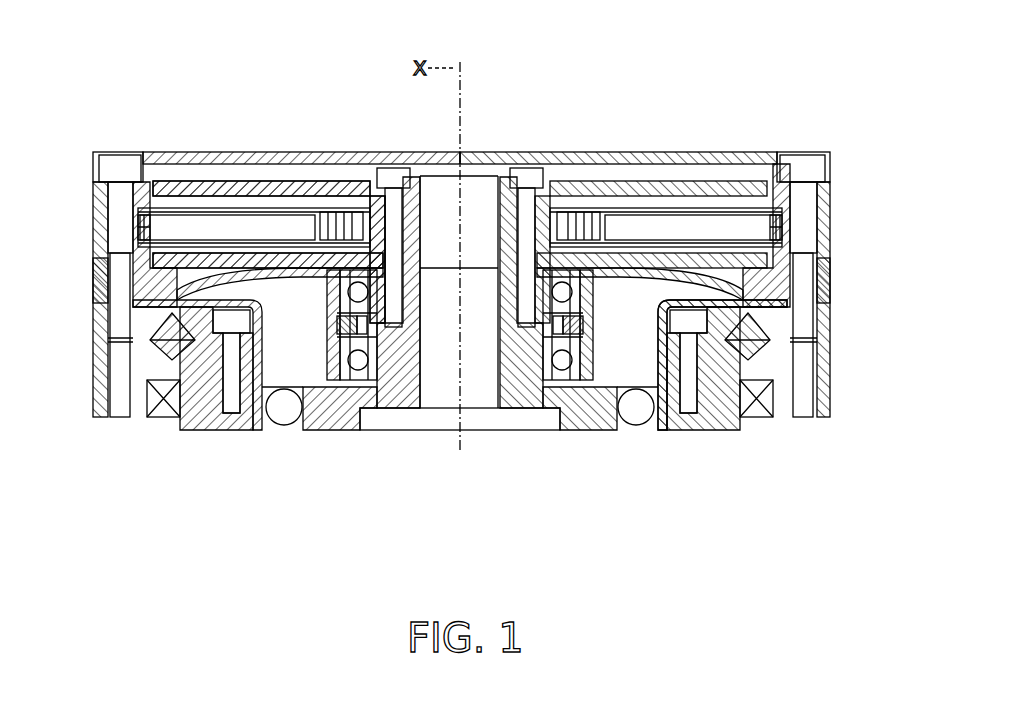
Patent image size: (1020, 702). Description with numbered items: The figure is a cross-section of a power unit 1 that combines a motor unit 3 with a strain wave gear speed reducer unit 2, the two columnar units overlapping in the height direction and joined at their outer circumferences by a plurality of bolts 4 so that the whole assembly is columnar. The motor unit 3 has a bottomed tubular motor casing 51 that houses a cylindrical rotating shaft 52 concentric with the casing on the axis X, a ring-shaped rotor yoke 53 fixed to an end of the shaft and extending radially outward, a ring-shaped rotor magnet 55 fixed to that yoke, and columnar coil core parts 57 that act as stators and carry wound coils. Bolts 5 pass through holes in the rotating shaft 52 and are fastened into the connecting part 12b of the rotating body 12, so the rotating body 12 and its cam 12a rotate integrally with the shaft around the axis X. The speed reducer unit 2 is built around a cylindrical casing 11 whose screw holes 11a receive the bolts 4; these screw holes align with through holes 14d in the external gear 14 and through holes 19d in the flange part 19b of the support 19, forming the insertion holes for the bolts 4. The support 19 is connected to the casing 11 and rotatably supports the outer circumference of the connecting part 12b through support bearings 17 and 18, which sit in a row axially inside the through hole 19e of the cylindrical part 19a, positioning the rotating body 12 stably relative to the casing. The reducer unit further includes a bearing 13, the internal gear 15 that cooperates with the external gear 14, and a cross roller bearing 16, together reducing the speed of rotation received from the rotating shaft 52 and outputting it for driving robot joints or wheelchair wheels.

The power unit 1 is at (822, 88).
The strain wave gear speed reducer unit 2 is at (797, 443).
The motor unit 3 is at (118, 126).
The bolts 4 is at (808, 222).
The bolts 5 is at (393, 168).
The casing 11 is at (830, 340).
The screw holes 11a is at (128, 365).
The rotating body 12 is at (349, 433).
The cam 12a is at (590, 430).
The connecting part 12b is at (437, 390).
The bearing 13 is at (637, 407).
The external gear 14 is at (665, 430).
The through holes 14d is at (812, 280).
The internal gear 15 is at (700, 430).
The cross roller bearing 16 is at (172, 360).
The support bearing 17 is at (540, 305).
The support bearing 18 is at (555, 350).
The support 19 is at (627, 266).
The cylindrical part 19a is at (297, 430).
The flange part 19b is at (681, 207).
The through holes 19d is at (112, 270).
The through hole 19e is at (390, 410).
The motor casing 51 is at (233, 152).
The rotating shaft 52 is at (508, 168).
The rotor yoke 53 is at (747, 187).
The rotor magnet 55 is at (186, 204).
The coil core parts 57 is at (308, 198).